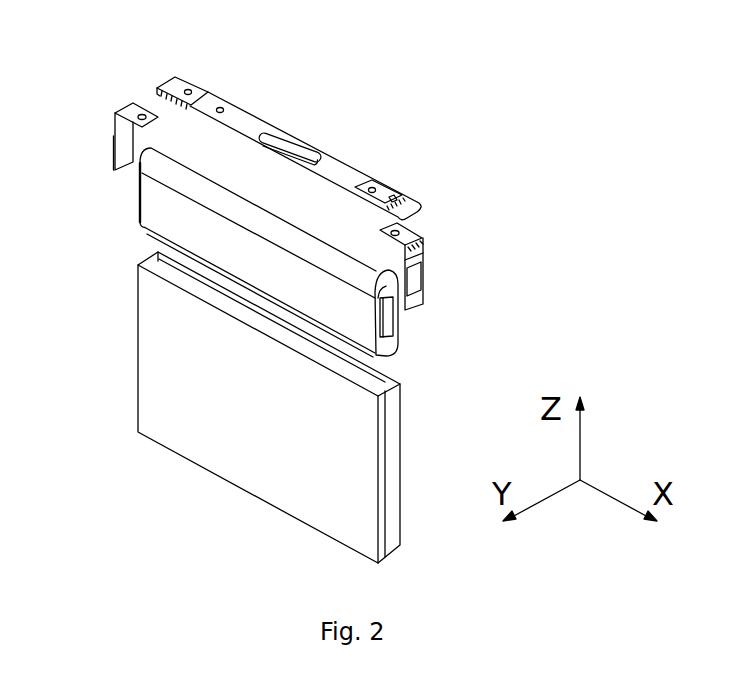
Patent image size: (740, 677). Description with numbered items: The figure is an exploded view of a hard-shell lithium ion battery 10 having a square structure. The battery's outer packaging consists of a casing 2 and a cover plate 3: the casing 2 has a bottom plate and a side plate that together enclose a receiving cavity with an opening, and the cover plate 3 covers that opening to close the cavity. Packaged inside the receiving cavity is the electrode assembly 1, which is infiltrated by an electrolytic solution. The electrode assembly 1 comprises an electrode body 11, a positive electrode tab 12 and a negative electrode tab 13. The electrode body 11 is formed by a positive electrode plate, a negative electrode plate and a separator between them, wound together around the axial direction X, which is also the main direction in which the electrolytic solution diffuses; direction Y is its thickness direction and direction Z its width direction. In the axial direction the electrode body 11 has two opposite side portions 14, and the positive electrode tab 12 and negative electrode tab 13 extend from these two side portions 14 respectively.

The lithium ion battery 10 is at (48, 53).
The electrode assembly 1 is at (150, 237).
The casing 2 is at (158, 372).
The cover plate 3 is at (338, 168).
The electrode body 11 is at (180, 210).
The positive electrode tab 12 is at (140, 191).
The negative electrode tab 13 is at (386, 317).
The side portions 14 is at (392, 344).